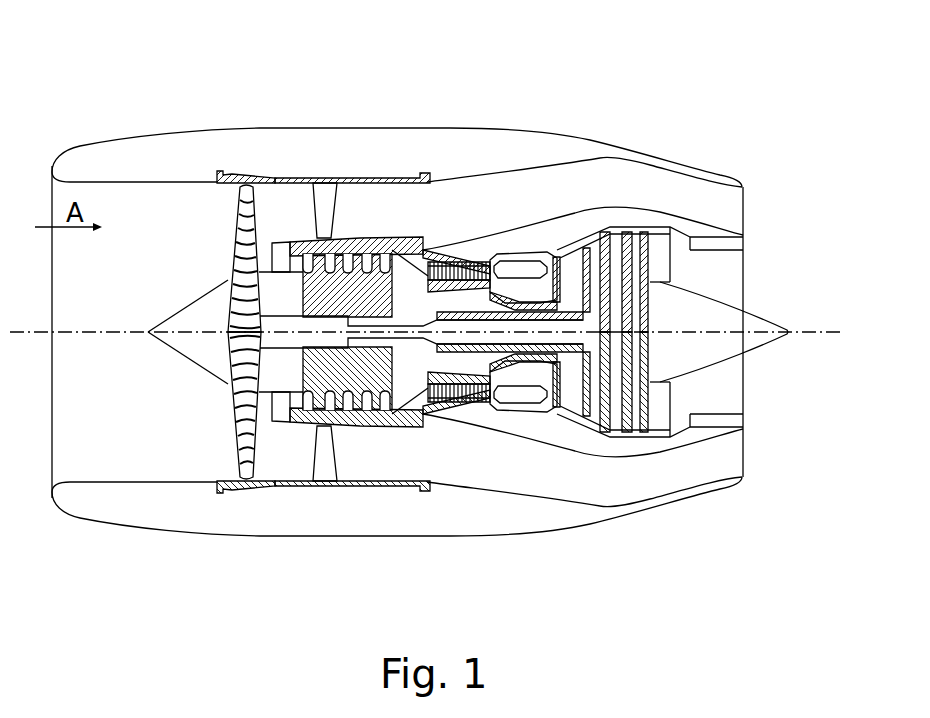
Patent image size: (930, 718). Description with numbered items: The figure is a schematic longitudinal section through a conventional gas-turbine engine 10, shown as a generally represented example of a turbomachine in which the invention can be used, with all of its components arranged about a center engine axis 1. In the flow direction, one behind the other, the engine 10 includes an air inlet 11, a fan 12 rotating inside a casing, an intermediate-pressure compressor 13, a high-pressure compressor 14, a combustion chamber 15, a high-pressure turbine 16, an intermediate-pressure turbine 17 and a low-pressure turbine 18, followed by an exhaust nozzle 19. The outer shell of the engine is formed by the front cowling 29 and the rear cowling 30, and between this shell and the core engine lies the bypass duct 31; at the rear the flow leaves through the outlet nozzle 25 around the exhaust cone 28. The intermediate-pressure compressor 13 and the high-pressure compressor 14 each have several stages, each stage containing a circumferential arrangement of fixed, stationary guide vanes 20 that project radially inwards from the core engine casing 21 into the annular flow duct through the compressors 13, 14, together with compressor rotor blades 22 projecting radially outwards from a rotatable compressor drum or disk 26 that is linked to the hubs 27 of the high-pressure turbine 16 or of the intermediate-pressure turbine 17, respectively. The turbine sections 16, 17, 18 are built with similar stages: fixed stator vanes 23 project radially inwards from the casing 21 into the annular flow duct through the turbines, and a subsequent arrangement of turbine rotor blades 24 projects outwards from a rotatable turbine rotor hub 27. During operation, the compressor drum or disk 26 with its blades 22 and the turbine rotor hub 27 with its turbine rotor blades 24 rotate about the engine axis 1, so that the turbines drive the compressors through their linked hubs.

The engine axis 1 is at (84, 333).
The gas-turbine engine 10 is at (575, 163).
The air inlet 11 is at (150, 209).
The fan 12 is at (260, 196).
The intermediate-pressure compressor 13 is at (338, 216).
The high-pressure compressor 14 is at (434, 262).
The combustion chamber 15 is at (513, 268).
The high-pressure turbine 16 is at (551, 257).
The intermediate-pressure turbine 17 is at (588, 258).
The low-pressure turbine 18 is at (656, 225).
The exhaust nozzle 19 is at (683, 264).
The guide vanes 20 is at (290, 428).
The core engine casing 21 is at (314, 430).
The compressor rotor blades 22 is at (337, 430).
The stator vanes 23 is at (597, 414).
The turbine rotor blades 24 is at (622, 414).
The outlet nozzle 25 is at (720, 202).
The compressor drum or disk 26 is at (493, 396).
The turbine rotor hub 27 is at (537, 396).
The exhaust cone 28 is at (754, 322).
The front cowling 29 is at (160, 153).
The rear cowling 30 is at (722, 176).
The bypass duct 31 is at (402, 213).